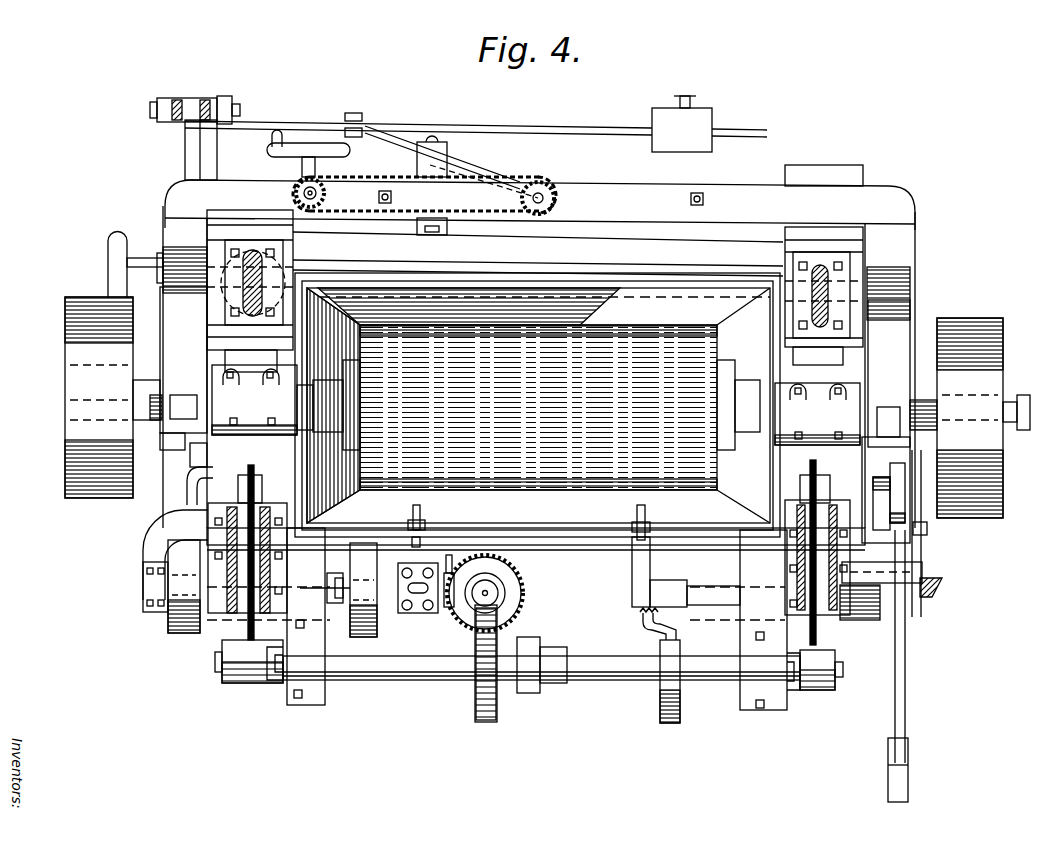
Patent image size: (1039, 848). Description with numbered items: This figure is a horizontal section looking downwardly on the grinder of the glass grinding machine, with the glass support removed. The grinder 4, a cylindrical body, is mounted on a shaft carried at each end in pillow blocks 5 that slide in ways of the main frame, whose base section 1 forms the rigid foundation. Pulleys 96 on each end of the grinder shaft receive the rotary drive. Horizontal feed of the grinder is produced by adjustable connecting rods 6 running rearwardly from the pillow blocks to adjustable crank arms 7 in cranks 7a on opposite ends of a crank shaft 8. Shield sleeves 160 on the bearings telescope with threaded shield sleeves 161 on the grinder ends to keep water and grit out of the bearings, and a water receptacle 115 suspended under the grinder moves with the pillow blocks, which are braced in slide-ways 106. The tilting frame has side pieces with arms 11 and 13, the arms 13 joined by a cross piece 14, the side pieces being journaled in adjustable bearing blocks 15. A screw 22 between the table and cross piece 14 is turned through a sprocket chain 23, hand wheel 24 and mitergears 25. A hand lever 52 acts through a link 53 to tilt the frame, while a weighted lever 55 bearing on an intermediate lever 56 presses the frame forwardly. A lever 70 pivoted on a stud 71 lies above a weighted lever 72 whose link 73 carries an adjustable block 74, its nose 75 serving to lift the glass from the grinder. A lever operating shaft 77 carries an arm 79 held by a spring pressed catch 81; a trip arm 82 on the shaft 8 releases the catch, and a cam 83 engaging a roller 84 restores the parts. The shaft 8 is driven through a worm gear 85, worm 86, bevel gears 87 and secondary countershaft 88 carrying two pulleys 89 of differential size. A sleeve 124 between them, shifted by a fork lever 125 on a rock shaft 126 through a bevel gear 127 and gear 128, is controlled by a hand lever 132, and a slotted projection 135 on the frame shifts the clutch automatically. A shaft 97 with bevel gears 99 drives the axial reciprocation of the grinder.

The base section 1 is at (725, 245).
The grinder 4 is at (600, 517).
The pillow block 5 is at (536, 405).
The adjustable connecting rod 6 is at (208, 503).
The adjustable crank arm 7 is at (245, 666).
The crank 7a is at (272, 682).
The crank shaft 8 is at (438, 668).
The arm 11 is at (535, 368).
The arm 13 is at (536, 291).
The cross piece 14 is at (640, 210).
The bearing block 15 is at (217, 275).
The screw 22 is at (544, 196).
The sprocket chain 23 is at (522, 180).
The hand wheel 24 is at (307, 143).
The mitergears 25 is at (416, 194).
The hand lever 52 is at (175, 98).
The link 53 is at (185, 147).
The weighted lever 55 is at (470, 123).
The intermediate lever 56 is at (452, 167).
The lever 70 is at (921, 546).
The stud 71 is at (905, 571).
The weighted lever 72 is at (905, 715).
The link 73 is at (913, 526).
The adjustable block 74 is at (938, 515).
The nose 75 is at (897, 462).
The lever operating shaft 77 is at (693, 592).
The arm 79 is at (665, 580).
The spring pressed catch 81 is at (645, 573).
The trip arm 82 is at (643, 625).
The cam 83 is at (680, 720).
The roller 84 is at (672, 613).
The worm gear 85 is at (488, 722).
The worm 86 is at (503, 581).
The bevel gears 87 is at (462, 565).
The secondary countershaft 88 is at (447, 600).
The pulley 89 is at (168, 620).
The pulley 96 is at (547, 407).
The shaft 97 is at (735, 598).
The bevel gears 99 is at (932, 590).
The slide-way 106 is at (108, 300).
The water receptacle 115 is at (535, 517).
The sleeve 124 is at (330, 580).
The fork lever 125 is at (225, 565).
The rock shaft 126 is at (205, 506).
The bevel gear 127 is at (297, 482).
The gear 128 is at (190, 458).
The hand lever 132 is at (207, 98).
The slotted projection 135 is at (155, 338).
The shield sleeve 160 is at (297, 398).
The shield sleeve 161 is at (742, 362).